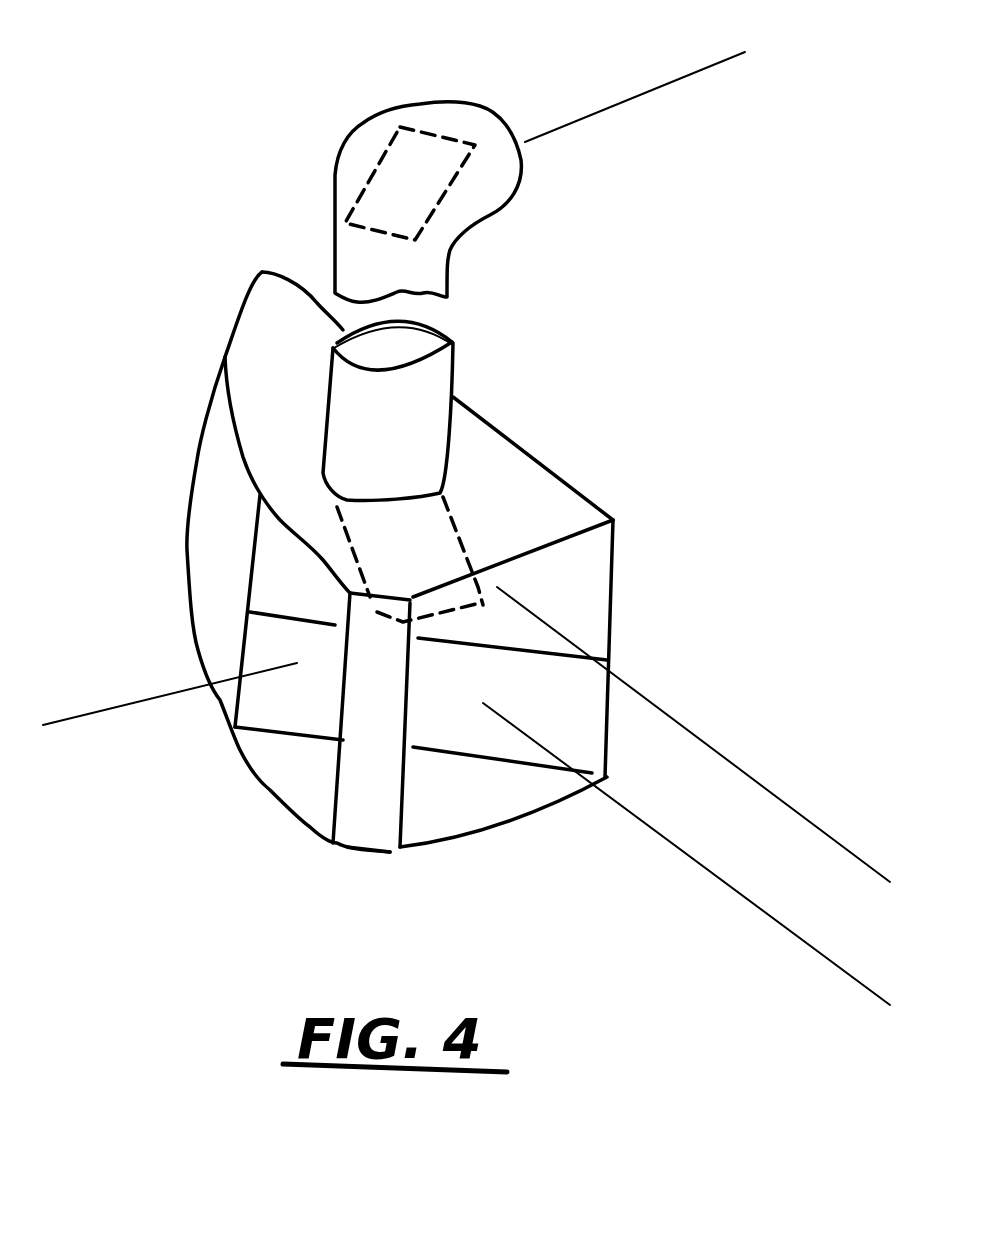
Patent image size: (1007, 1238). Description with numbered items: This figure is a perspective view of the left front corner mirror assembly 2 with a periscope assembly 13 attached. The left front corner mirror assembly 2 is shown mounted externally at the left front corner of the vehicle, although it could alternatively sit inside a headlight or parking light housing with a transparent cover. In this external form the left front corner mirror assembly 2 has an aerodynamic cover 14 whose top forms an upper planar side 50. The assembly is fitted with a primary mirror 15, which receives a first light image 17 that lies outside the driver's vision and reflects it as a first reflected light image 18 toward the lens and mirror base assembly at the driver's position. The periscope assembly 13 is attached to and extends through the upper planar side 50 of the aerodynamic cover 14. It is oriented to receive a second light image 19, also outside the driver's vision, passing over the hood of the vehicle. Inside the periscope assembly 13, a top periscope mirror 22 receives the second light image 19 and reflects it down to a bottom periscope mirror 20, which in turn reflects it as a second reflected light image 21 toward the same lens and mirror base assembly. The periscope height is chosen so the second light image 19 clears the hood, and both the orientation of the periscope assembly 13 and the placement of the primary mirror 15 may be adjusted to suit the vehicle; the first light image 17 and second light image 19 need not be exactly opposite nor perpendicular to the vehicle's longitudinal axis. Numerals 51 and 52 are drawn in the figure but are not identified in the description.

The left front corner mirror assembly 2 is at (212, 353).
The periscope assembly 13 is at (453, 370).
The aerodynamic cover 14 is at (230, 505).
The primary mirror 15 is at (303, 707).
The first light image 17 is at (118, 702).
The first reflected light image 18 is at (785, 927).
The second light image 19 is at (640, 80).
The bottom periscope mirror 20 is at (453, 527).
The second reflected light image 21 is at (758, 785).
The top periscope mirror 22 is at (402, 187).
The upper planar side 50 is at (554, 534).
The head 51 is at (403, 90).
The channel 52 is at (458, 473).